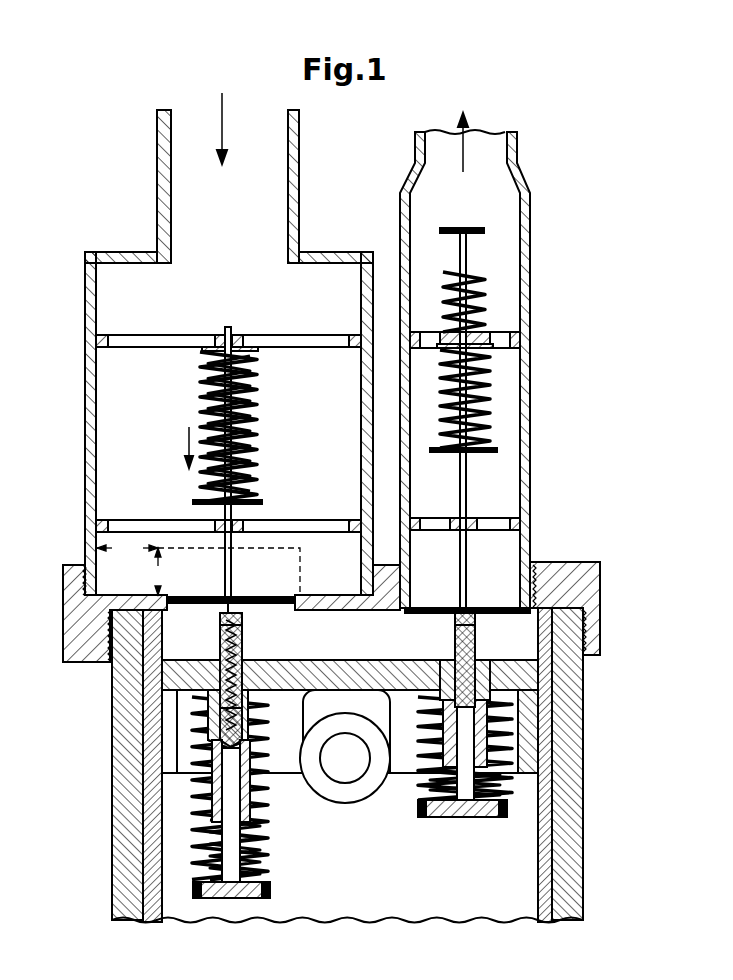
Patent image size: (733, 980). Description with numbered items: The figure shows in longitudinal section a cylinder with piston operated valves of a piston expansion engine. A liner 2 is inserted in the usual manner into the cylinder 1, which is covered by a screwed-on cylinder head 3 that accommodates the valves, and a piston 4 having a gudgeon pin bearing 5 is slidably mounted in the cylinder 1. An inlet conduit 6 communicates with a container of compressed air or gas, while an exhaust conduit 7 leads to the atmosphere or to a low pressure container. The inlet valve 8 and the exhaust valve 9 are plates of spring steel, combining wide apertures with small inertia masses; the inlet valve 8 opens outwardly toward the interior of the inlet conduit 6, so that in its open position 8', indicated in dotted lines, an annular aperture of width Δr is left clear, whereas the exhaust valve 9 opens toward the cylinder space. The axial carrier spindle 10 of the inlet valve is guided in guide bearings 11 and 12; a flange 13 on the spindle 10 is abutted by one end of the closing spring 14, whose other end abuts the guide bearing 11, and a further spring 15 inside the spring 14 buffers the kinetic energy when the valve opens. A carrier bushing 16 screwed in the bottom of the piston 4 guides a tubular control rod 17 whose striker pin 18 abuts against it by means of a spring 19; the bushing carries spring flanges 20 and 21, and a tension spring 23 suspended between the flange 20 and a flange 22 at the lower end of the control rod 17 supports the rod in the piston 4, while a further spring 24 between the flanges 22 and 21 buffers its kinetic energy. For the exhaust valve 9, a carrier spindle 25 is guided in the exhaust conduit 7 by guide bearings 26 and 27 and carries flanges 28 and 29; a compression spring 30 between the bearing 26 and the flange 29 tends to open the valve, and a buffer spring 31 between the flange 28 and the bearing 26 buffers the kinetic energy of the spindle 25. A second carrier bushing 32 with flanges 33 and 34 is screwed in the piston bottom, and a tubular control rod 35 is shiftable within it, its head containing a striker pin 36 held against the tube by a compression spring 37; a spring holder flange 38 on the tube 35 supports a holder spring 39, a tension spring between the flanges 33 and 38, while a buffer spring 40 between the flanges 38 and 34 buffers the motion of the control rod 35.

The cylinder 1 is at (567, 836).
The liner 2 is at (540, 871).
The cylinder head 3 is at (572, 600).
The piston 4 is at (510, 675).
The gudgeon pin bearing 5 is at (350, 780).
The inlet conduit 6 is at (112, 394).
The exhaust conduit 7 is at (500, 465).
The inlet valve 8 is at (231, 589).
The open position of inlet valve 8' is at (216, 564).
The exhaust valve 9 is at (478, 609).
The carrier spindle 10 is at (232, 574).
The guide bearing 11 is at (236, 337).
The guide bearing 12 is at (215, 525).
The flange 13 is at (250, 502).
The closing spring 14 is at (205, 371).
The buffer spring 15 is at (242, 421).
The carrier bushing 16 is at (200, 690).
The control rod 17 is at (243, 647).
The striker pin 18 is at (243, 626).
The spring 19 is at (222, 635).
The spring flange 20 is at (265, 706).
The spring flange 21 is at (206, 818).
The flange 22 is at (272, 888).
The tension spring 23 is at (266, 822).
The buffer spring 24 is at (262, 856).
The carrier spindle 25 is at (462, 548).
The guide bearing 26 is at (485, 335).
The guide bearing 27 is at (470, 518).
The flange 28 is at (460, 228).
The flange 29 is at (448, 452).
The compression spring 30 is at (445, 403).
The buffer spring 31 is at (481, 281).
The carrier bushing 32 is at (446, 660).
The flange 33 is at (510, 704).
The flange 34 is at (500, 776).
The control rod 35 is at (460, 739).
The striker pin 36 is at (476, 629).
The compression spring 37 is at (476, 651).
The spring holder flange 38 is at (425, 808).
The holder spring 39 is at (422, 775).
The buffer spring 40 is at (445, 818).